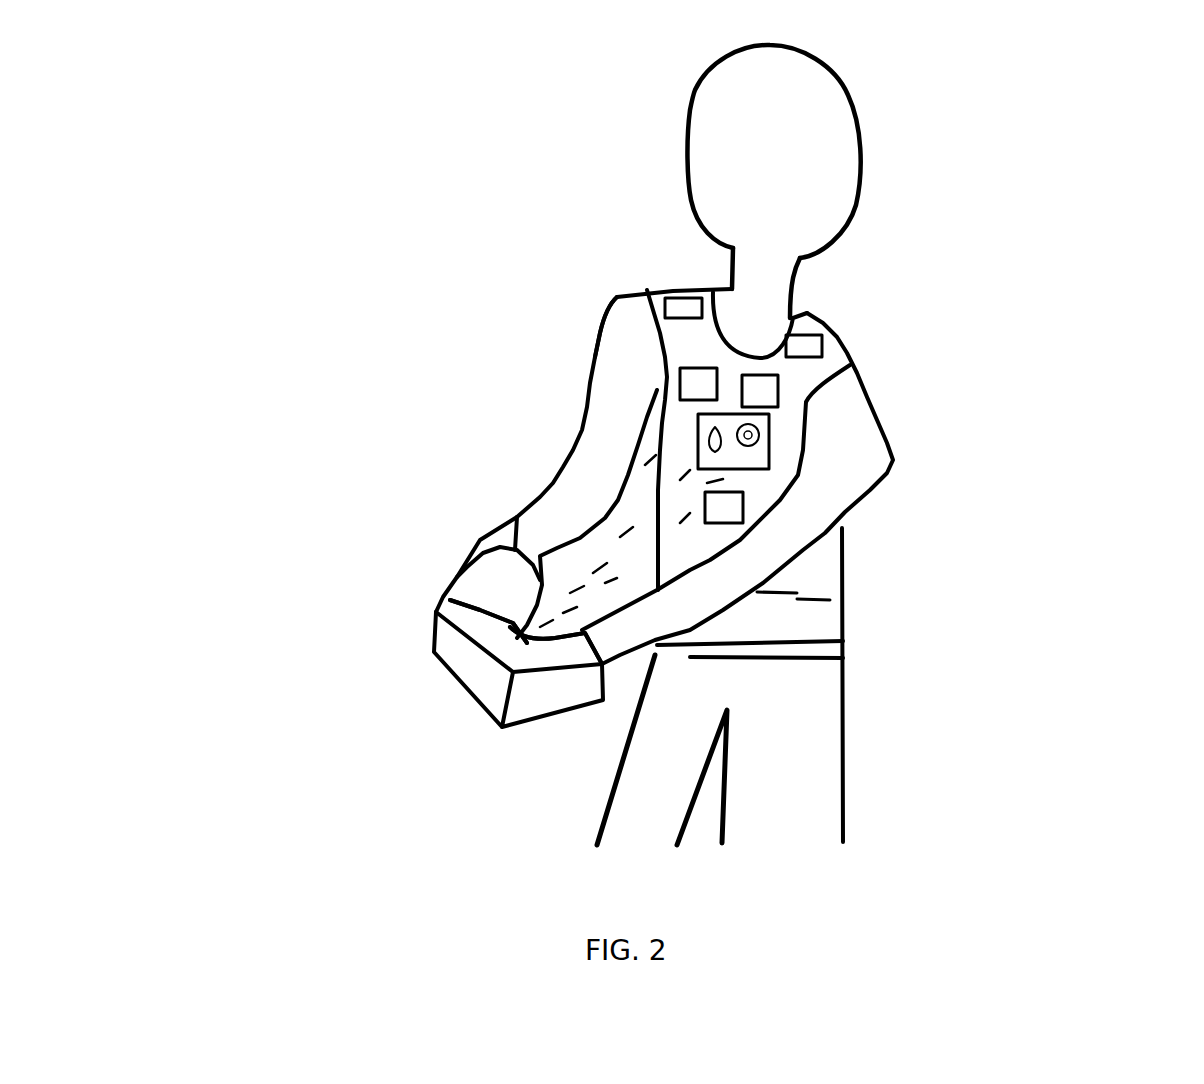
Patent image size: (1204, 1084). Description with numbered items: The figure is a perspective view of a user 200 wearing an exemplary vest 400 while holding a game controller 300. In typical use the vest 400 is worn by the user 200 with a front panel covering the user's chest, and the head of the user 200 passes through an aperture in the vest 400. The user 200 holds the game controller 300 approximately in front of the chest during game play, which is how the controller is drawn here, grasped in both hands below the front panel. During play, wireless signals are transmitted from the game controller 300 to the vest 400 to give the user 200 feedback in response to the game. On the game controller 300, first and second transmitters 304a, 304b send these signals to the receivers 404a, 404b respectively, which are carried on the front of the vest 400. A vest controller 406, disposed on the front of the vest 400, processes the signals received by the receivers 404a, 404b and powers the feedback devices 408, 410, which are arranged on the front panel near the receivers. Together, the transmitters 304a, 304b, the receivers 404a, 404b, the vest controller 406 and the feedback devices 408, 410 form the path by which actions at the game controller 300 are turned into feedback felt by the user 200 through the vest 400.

The user 200 is at (605, 335).
The game controller 300 is at (435, 650).
The first transmitter 304a is at (510, 627).
The second transmitter 304b is at (510, 627).
The vest 400 is at (800, 313).
The receiver 404a is at (738, 428).
The receiver 404b is at (708, 427).
The vest controller 406 is at (743, 508).
The feedback device 408 is at (780, 390).
The feedback device 410 is at (698, 368).